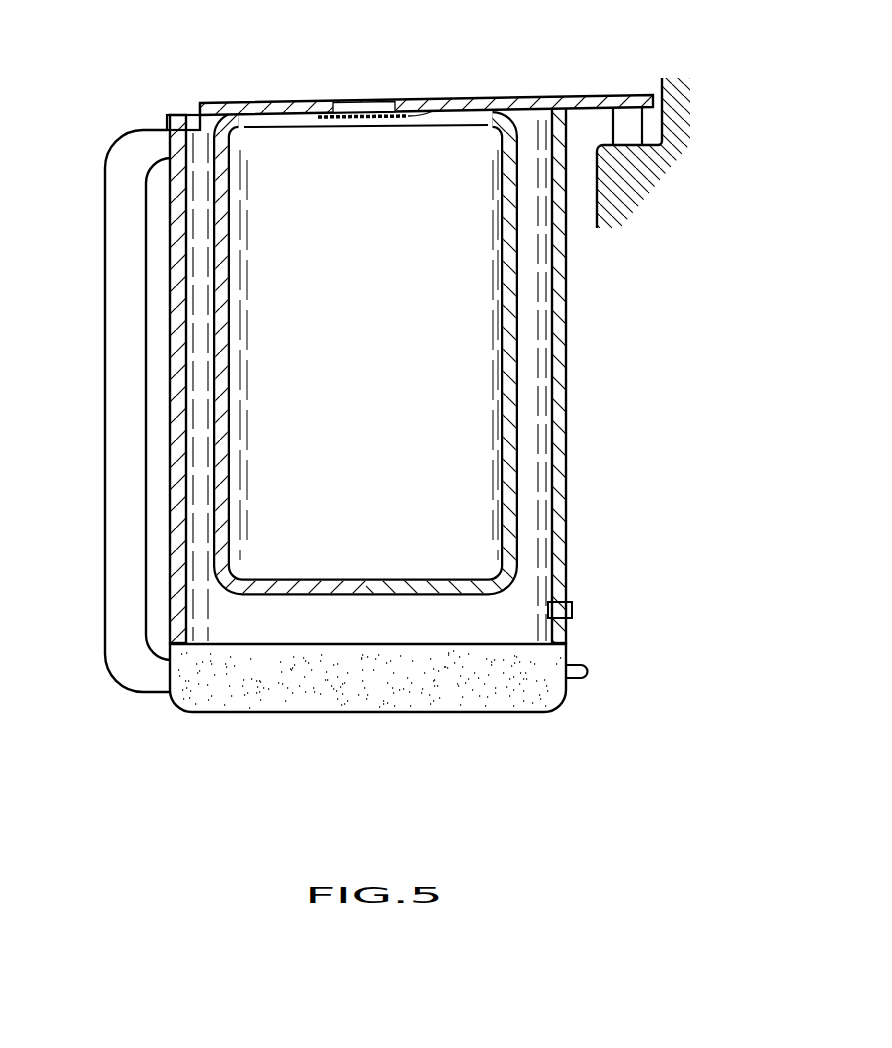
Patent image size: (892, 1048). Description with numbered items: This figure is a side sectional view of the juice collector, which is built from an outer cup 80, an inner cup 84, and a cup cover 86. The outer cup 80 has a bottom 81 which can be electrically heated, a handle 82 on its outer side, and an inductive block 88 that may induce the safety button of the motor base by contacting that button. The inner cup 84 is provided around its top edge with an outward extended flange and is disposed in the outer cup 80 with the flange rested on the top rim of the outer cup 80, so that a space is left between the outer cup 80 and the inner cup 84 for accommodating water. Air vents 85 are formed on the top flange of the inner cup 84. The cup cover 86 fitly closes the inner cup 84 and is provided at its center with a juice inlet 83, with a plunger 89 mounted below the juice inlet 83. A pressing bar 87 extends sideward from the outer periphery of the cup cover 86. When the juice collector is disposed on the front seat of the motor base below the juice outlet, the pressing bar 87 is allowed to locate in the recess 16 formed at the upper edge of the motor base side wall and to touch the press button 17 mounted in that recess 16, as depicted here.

The outer cup 80 is at (560, 397).
The bottom 81 is at (415, 690).
The handle 82 is at (108, 507).
The juice inlet 83 is at (362, 100).
The inner cup 84 is at (222, 374).
The air vents 85 is at (180, 118).
The cup cover 86 is at (271, 101).
The pressing bar 87 is at (622, 103).
The inductive block 88 is at (572, 607).
The plunger 89 is at (440, 110).
The recess 16 is at (655, 125).
The press button 17 is at (630, 130).